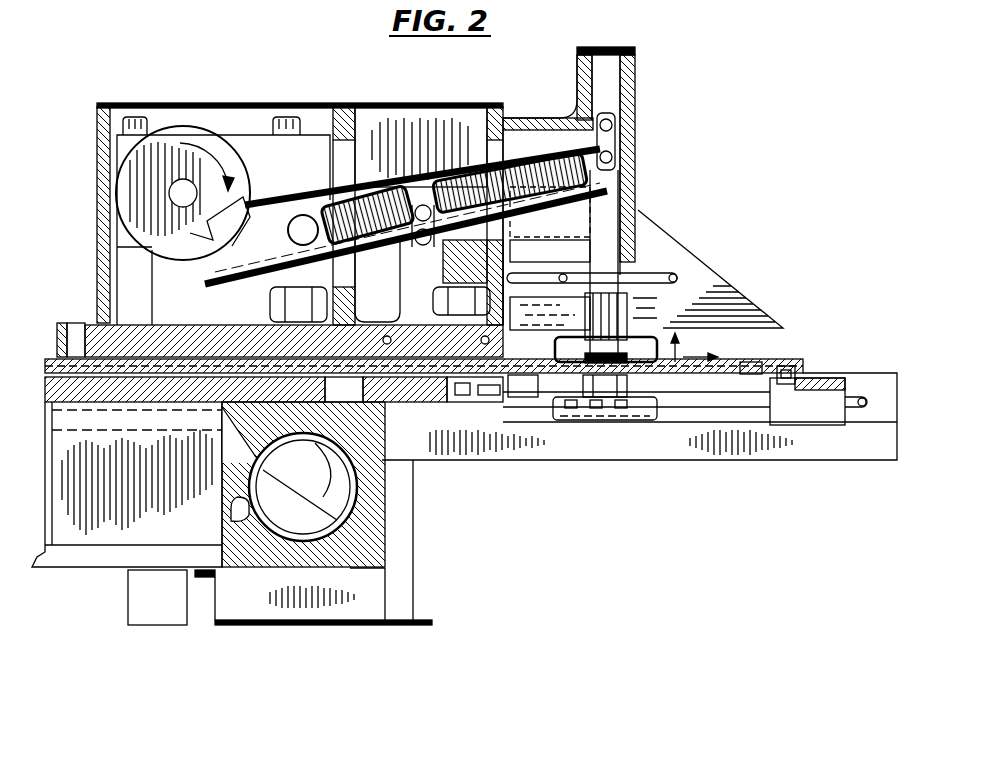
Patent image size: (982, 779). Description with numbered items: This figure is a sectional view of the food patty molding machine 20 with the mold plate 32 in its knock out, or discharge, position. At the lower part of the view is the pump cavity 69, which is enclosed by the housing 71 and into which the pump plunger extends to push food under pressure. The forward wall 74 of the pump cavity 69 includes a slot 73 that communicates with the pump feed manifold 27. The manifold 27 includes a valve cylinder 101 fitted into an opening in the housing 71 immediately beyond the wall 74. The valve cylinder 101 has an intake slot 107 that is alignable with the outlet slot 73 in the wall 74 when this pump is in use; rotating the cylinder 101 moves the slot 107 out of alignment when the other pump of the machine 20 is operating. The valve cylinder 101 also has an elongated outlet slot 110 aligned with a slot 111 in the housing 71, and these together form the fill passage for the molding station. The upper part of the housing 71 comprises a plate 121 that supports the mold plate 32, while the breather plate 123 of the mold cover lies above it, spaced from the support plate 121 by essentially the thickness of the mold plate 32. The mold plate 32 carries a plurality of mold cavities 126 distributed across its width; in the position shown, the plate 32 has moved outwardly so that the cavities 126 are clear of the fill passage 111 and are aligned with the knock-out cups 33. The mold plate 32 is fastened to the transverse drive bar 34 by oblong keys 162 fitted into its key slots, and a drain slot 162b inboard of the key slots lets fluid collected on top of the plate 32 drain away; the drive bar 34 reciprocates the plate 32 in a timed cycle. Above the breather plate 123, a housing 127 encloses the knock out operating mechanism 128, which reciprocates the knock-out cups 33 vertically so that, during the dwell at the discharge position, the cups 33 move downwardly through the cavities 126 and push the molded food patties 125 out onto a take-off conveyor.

The food patty molding machine 20 is at (665, 58).
The knock out operating mechanism 128 is at (430, 98).
The housing 127 is at (638, 146).
The knock-out cups 33 is at (663, 328).
The mold plate 32 is at (748, 367).
The drive bar 34 is at (823, 373).
The breather plate 123 is at (50, 357).
The plate 121 is at (412, 403).
The mold cavities 126 is at (533, 364).
The molded food patties 125 is at (640, 367).
The drain slot 162b is at (750, 367).
The oblong keys 162 is at (795, 388).
The outlet slot 110 is at (382, 503).
The slot 111 is at (382, 523).
The intake slot 107 is at (390, 572).
The pump feed manifold 27 is at (345, 540).
The valve cylinder 101 is at (360, 580).
The pump cavity 69 is at (117, 513).
The forward wall 74 is at (243, 418).
The slot 73 is at (243, 505).
The housing 71 is at (300, 570).